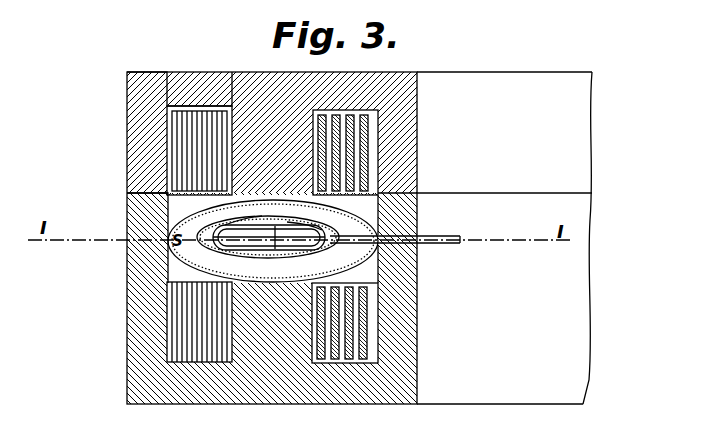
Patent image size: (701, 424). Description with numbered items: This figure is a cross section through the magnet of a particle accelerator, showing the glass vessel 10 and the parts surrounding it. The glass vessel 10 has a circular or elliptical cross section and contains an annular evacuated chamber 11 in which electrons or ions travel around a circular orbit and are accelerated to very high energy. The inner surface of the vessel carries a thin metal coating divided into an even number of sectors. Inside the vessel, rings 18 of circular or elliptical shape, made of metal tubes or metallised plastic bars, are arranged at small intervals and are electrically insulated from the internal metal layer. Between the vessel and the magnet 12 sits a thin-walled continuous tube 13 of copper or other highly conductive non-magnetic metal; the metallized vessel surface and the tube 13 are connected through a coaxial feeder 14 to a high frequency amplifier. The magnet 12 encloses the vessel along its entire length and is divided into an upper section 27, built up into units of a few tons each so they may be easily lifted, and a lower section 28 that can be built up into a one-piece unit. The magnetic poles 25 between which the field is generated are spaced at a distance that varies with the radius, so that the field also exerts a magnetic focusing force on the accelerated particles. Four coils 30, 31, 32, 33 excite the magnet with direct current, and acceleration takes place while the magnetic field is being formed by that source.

The glass vessel 10 is at (323, 207).
The annular evacuated chamber 11 is at (293, 219).
The magnet 12 is at (410, 72).
The tube 13 is at (364, 266).
The coaxial feeder 14 is at (450, 238).
The rings 18 is at (236, 224).
The magnetic poles 25 is at (257, 246).
The upper section 27 is at (140, 124).
The lower section 28 is at (143, 213).
The coil 30 is at (172, 152).
The coil 31 is at (345, 140).
The coil 32 is at (366, 331).
The coil 33 is at (173, 326).